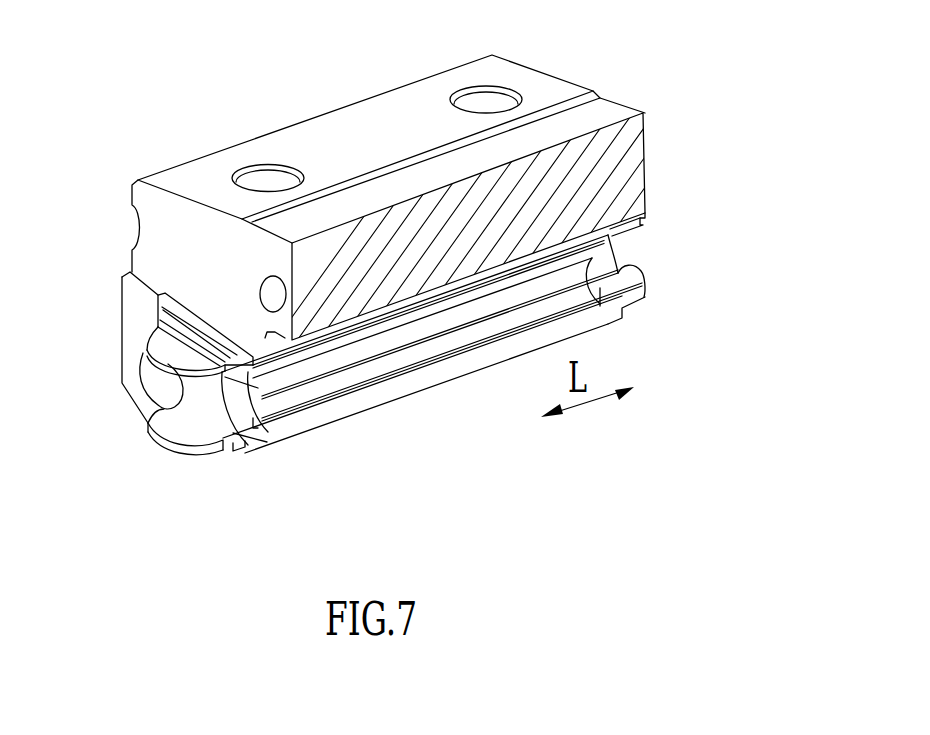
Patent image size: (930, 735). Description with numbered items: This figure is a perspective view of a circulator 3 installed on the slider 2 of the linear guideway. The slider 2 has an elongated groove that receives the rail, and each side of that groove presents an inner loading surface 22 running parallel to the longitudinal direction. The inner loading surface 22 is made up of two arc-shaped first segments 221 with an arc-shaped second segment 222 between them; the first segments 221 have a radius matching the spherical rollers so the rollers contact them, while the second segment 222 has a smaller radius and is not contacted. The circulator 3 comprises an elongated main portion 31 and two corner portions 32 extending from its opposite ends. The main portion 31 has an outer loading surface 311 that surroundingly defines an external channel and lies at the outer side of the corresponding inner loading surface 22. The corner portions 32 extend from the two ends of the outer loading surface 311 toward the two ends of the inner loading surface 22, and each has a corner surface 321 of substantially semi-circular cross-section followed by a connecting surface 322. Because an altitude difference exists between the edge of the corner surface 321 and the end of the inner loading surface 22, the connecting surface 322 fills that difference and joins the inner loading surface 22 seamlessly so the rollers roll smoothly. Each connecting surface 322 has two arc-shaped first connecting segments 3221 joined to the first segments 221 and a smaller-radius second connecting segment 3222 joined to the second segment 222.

The slider 2 is at (368, 93).
The inner loading surface 22 is at (480, 443).
The first segment 221 is at (440, 343).
The second segment 222 is at (392, 338).
The circulator 3 is at (52, 285).
The main portion 31 is at (130, 295).
The corner portion 32 is at (157, 350).
The outer loading surface 311 is at (167, 394).
The corner surface 321 is at (175, 427).
The connecting surface 322 is at (345, 502).
The first connecting segment 3221 is at (243, 417).
The second connecting segment 3222 is at (257, 398).